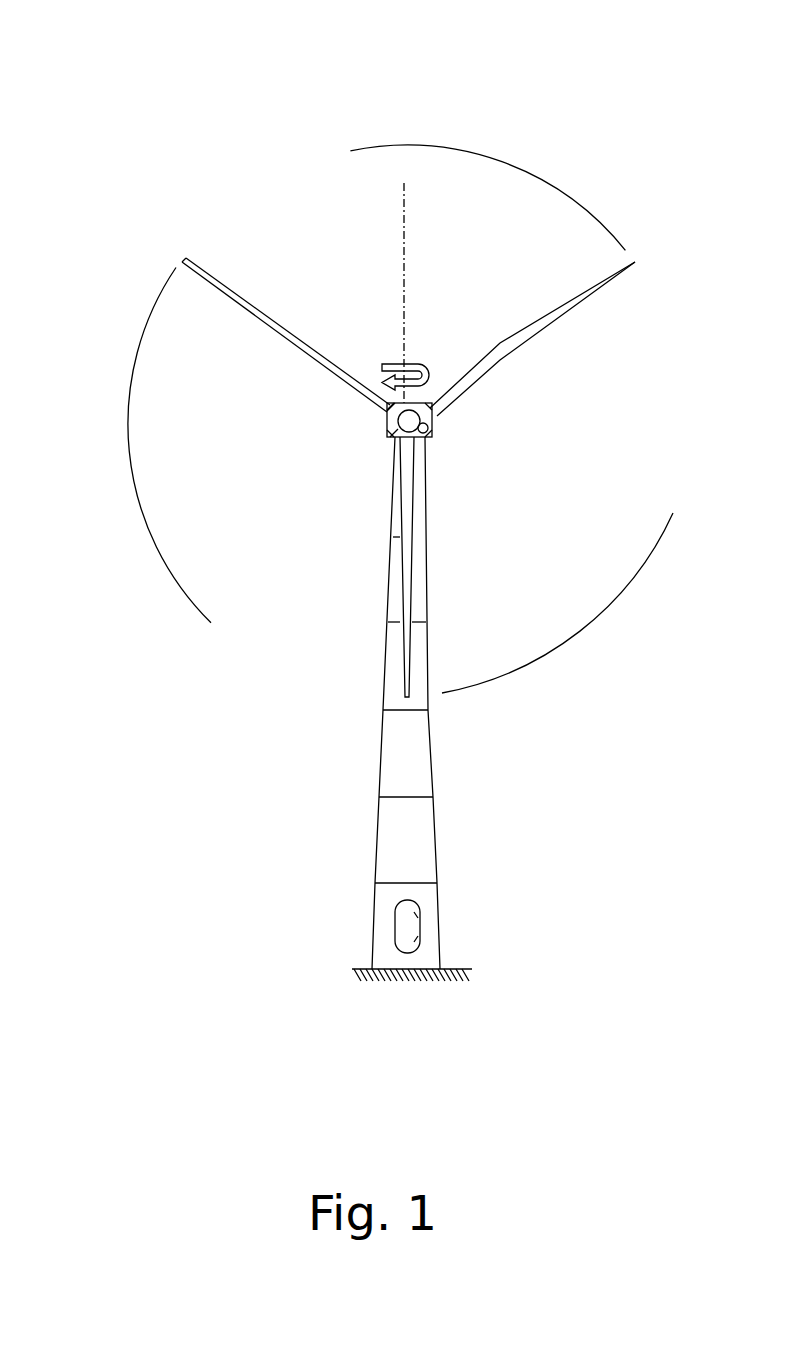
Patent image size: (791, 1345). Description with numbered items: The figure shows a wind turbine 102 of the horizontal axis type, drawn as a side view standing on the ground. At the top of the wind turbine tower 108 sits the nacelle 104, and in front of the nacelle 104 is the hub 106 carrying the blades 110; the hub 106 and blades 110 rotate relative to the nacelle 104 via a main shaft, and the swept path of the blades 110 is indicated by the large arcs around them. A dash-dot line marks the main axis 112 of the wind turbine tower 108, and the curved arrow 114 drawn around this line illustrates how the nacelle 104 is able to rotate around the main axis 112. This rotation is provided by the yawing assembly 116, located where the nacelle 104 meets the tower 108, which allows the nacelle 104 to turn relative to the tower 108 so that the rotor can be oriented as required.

The wind turbine 102 is at (167, 92).
The nacelle 104 is at (387, 430).
The hub 106 is at (410, 420).
The wind turbine tower 108 is at (423, 750).
The blades 110 is at (495, 357).
The main axis 112 is at (404, 218).
The arrow 114 is at (407, 370).
The yawing assembly 116 is at (423, 445).